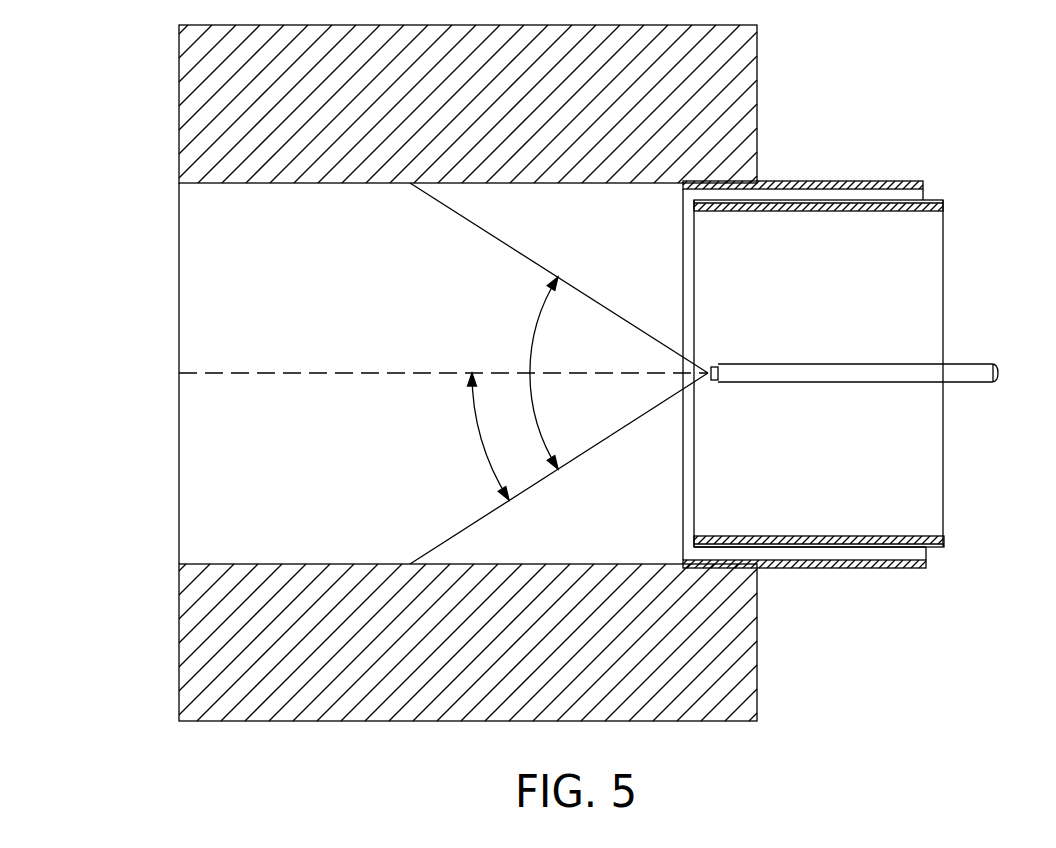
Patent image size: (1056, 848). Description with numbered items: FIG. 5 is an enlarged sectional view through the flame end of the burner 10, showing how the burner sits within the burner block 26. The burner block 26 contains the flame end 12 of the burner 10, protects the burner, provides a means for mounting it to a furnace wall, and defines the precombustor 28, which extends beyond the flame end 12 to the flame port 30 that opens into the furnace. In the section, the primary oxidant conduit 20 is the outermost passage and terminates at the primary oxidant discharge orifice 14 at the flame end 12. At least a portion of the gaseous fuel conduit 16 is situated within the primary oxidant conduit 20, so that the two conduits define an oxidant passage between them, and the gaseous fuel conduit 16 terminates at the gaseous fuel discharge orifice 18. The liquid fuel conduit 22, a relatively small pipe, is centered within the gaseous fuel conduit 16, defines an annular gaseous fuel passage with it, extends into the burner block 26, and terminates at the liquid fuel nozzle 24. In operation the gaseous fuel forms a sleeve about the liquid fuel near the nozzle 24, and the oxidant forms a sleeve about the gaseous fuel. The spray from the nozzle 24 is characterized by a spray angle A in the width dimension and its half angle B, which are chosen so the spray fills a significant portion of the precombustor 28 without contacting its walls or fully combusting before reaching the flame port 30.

The burner 10 is at (148, 630).
The flame end 12 is at (694, 270).
The primary oxidant discharge orifice 14 is at (683, 233).
The gaseous fuel conduit 16 is at (840, 207).
The gaseous fuel discharge orifice 18 is at (694, 499).
The primary oxidant conduit 20 is at (883, 182).
The liquid fuel conduit 22 is at (967, 371).
The liquid fuel nozzle 24 is at (711, 380).
The burner block 26 is at (684, 721).
The precombustor 28 is at (385, 183).
The flame port 30 is at (179, 268).